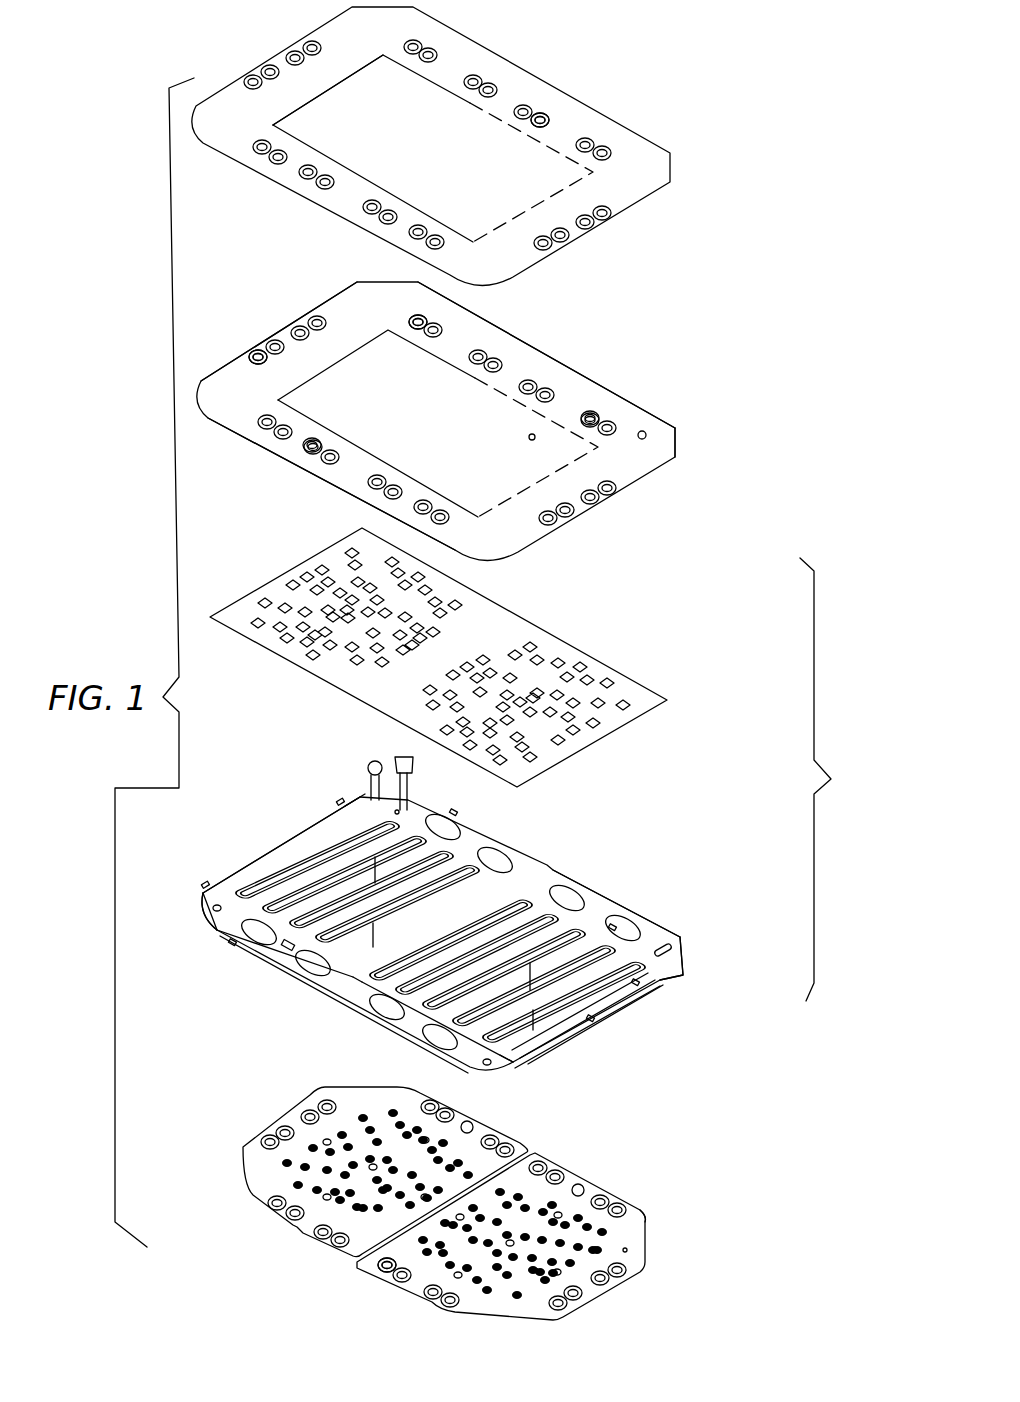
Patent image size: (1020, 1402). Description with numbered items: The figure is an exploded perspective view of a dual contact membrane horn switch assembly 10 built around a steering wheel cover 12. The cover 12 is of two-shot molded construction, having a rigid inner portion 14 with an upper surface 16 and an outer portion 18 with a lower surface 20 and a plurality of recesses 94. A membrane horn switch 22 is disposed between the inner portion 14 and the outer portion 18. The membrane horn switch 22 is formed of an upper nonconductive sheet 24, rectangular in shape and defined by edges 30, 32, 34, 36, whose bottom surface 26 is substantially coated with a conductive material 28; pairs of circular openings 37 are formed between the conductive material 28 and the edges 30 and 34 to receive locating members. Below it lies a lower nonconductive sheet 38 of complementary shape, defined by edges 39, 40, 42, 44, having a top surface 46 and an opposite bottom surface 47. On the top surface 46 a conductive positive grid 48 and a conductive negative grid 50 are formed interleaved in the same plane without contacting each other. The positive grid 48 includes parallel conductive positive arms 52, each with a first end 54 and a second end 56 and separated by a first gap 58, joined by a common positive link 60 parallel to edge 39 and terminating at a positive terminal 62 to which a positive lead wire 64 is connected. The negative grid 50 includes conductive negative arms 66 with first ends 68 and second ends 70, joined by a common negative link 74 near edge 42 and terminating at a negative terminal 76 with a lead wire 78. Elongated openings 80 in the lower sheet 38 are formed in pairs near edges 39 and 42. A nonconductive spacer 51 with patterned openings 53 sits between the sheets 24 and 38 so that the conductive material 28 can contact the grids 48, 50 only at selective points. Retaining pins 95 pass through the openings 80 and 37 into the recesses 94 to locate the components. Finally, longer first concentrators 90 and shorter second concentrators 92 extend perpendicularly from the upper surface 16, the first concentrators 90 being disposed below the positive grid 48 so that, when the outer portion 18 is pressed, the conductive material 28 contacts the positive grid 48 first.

The dual contact membrane horn switch assembly 10 is at (837, 938).
The steering wheel cover 12 is at (196, 48).
The inner portion 14 is at (650, 1245).
The upper surface 16 is at (628, 1251).
The outer portion 18 is at (613, 226).
The lower surface 20 is at (487, 217).
The membrane horn switch 22 is at (498, 816).
The upper nonconductive sheet 24 is at (570, 522).
The bottom surface 26 is at (647, 436).
The conductive material 28 is at (536, 434).
The edge 30 is at (542, 350).
The edge 32 is at (635, 482).
The edge 34 is at (325, 487).
The edge 36 is at (297, 312).
The openings 37 is at (416, 318).
The lower nonconductive sheet 38 is at (230, 868).
The edge 39 is at (602, 910).
The edge 40 is at (565, 1040).
The edge 42 is at (300, 973).
The edge 44 is at (332, 822).
The top surface 46 is at (684, 958).
The bottom surface 47 is at (548, 1050).
The conductive positive grid 48 is at (590, 1010).
The conductive negative grid 50 is at (222, 876).
The nonconductive spacer 51 is at (585, 745).
The conductive positive arms 52 is at (305, 860).
The openings 53 is at (592, 720).
The first end 54 is at (232, 905).
The second end 56 is at (662, 975).
The first gap 58 is at (513, 1053).
The common positive link 60 is at (608, 927).
The positive terminal 62 is at (410, 803).
The positive lead wire 64 is at (396, 760).
The conductive negative arms 66 is at (230, 940).
The first end 68 is at (452, 847).
The second end 70 is at (627, 1228).
The common negative link 74 is at (255, 910).
The negative terminal 76 is at (366, 808).
The lead wire 78 is at (366, 768).
The openings 80 is at (503, 860).
The first concentrators 90 is at (330, 1140).
The second concentrators 92 is at (300, 1138).
The recesses 94 is at (543, 115).
The retaining pins 95 is at (388, 1262).